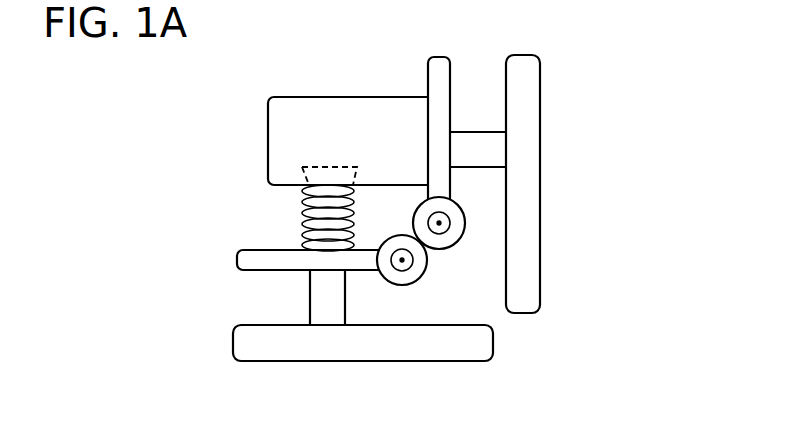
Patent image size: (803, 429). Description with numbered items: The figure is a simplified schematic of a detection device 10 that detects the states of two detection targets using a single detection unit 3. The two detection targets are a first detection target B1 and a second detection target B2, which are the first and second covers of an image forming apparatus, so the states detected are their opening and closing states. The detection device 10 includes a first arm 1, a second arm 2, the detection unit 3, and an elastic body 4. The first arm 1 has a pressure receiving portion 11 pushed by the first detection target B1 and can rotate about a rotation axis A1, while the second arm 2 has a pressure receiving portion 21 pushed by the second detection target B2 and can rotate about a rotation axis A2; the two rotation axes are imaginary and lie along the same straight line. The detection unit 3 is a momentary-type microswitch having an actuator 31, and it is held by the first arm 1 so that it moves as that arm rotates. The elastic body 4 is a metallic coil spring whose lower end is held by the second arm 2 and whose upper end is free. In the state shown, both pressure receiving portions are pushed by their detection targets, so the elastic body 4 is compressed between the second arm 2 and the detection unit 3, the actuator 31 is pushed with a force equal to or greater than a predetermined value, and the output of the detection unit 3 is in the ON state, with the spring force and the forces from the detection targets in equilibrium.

The detection device 10 is at (623, 90).
The first arm 1 is at (435, 68).
The pressure receiving portion 11 is at (478, 130).
The second arm 2 is at (242, 258).
The pressure receiving portion 21 is at (327, 273).
The detection unit 3 is at (299, 104).
The actuator 31 is at (346, 169).
The elastic body 4 is at (304, 216).
The rotation axis A1 is at (447, 231).
The rotation axis A2 is at (408, 266).
The first detection target B1 is at (533, 180).
The second detection target B2 is at (241, 344).